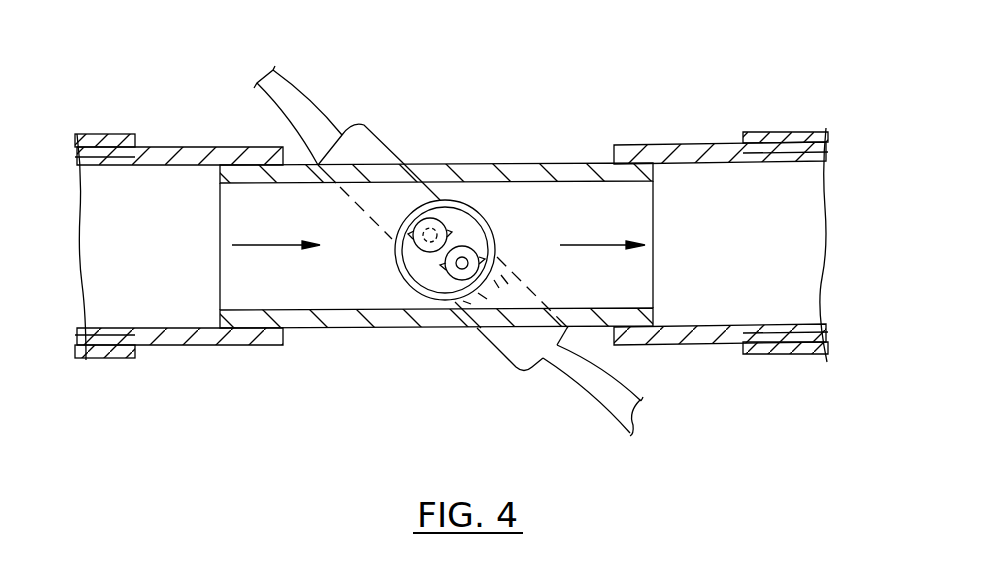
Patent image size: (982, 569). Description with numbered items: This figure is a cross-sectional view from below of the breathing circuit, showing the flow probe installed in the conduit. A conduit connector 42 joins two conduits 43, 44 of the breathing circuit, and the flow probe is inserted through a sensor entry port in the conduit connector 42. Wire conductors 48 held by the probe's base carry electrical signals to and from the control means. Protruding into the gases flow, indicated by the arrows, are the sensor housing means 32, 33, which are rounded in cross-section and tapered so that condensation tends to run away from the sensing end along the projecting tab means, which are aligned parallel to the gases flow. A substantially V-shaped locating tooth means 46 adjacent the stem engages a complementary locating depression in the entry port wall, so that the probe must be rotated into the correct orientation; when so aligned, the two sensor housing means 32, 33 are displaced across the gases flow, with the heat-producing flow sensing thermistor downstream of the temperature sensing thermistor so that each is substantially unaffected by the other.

The sensor housing means 32 is at (427, 257).
The sensor housing means 33 is at (463, 246).
The conduit connector 42 is at (562, 163).
The conduit 43 is at (172, 145).
The conduit 44 is at (707, 142).
The locating tooth means 46 is at (493, 257).
The wire conductors 48 is at (307, 97).